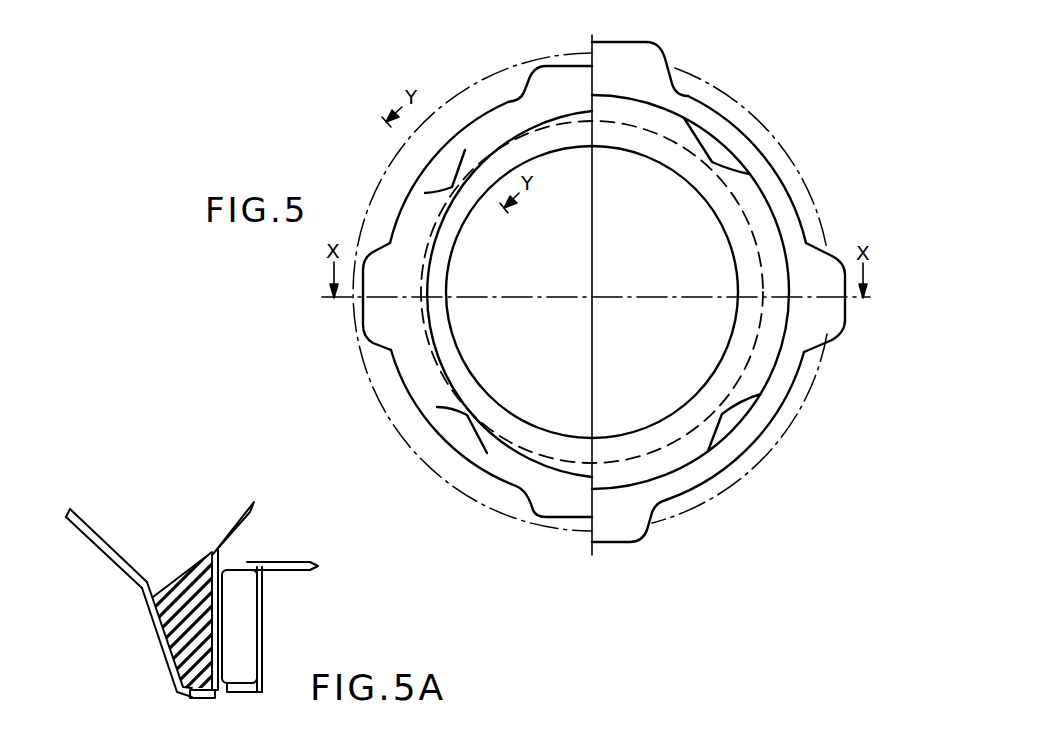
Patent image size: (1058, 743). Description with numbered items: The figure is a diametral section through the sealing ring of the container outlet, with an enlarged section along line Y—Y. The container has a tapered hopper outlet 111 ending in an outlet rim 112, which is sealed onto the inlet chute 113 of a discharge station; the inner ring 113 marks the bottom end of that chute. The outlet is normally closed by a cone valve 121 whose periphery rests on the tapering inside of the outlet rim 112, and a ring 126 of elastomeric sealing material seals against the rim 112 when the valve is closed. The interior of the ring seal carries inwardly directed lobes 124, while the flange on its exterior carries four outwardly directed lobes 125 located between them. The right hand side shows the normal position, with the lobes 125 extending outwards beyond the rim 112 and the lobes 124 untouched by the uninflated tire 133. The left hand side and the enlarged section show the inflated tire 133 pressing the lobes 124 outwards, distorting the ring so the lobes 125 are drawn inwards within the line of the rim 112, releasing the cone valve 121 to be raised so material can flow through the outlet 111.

In FIG. 5A, the hopper outlet 111 is at (95, 559).
In FIG. 5, the outlet rim 112 is at (357, 213).
In FIG. 5A, the outlet rim 112 is at (158, 623).
In FIG. 5, the inlet chute 113 is at (740, 260).
In FIG. 5A, the cone valve 121 is at (243, 519).
In FIG. 5, the inwardly directed lobes 124 is at (452, 190).
In FIG. 5, the outwardly directed lobes 125 is at (830, 275).
In FIG. 5A, the ring of elastomeric sealing material 126 is at (197, 593).
In FIG. 5, the inflatable tire 133 is at (523, 135).
In FIG. 5A, the inflatable tire 133 is at (240, 634).